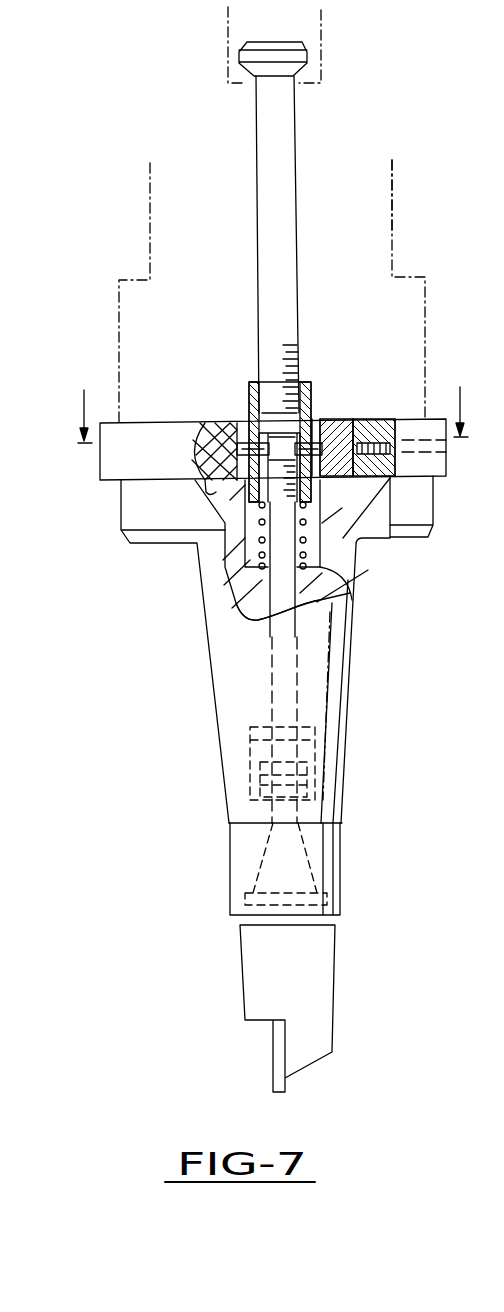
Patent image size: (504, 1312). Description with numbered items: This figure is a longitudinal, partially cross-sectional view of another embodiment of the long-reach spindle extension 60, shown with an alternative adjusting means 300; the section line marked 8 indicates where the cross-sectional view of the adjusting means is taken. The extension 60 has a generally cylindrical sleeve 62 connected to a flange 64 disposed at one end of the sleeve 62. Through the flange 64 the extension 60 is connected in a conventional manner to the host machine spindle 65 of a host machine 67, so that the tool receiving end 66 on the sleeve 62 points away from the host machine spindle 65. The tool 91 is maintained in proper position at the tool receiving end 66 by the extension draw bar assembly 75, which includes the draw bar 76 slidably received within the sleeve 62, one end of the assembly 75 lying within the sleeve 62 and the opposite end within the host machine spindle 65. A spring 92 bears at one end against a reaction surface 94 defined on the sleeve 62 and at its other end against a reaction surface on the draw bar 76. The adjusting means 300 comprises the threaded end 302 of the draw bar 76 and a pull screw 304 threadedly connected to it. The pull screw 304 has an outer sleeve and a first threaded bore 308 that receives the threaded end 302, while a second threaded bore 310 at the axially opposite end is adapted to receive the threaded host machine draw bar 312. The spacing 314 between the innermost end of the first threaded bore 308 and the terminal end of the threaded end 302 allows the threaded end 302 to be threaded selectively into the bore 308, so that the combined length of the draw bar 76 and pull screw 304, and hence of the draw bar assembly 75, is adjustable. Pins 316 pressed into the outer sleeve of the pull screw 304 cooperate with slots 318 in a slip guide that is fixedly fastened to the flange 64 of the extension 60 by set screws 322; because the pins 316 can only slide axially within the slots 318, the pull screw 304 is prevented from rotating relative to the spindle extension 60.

The long-reach spindle extension 60 is at (131, 589).
The sleeve 62 is at (352, 648).
The flange 64 is at (98, 459).
The host machine spindle 65 is at (392, 247).
The tool receiving end 66 is at (347, 922).
The host machine 67 is at (128, 194).
The extension draw bar assembly 75 is at (260, 705).
The draw bar 76 is at (287, 699).
The tool 91 is at (250, 935).
The spring 92 is at (306, 547).
The reaction surface 94 is at (340, 593).
The adjusting means 300 is at (189, 439).
The threaded end 302 is at (200, 464).
The pull screw 304 is at (312, 392).
The first threaded bore 308 is at (290, 430).
The second threaded bore 310 is at (270, 380).
The host machine draw bar 312 is at (286, 224).
The spacing 314 is at (189, 444).
The pins 316 is at (322, 481).
The slots 318 is at (447, 185).
The set screws 322 is at (396, 479).
The section line 8- 8 is at (270, 415).